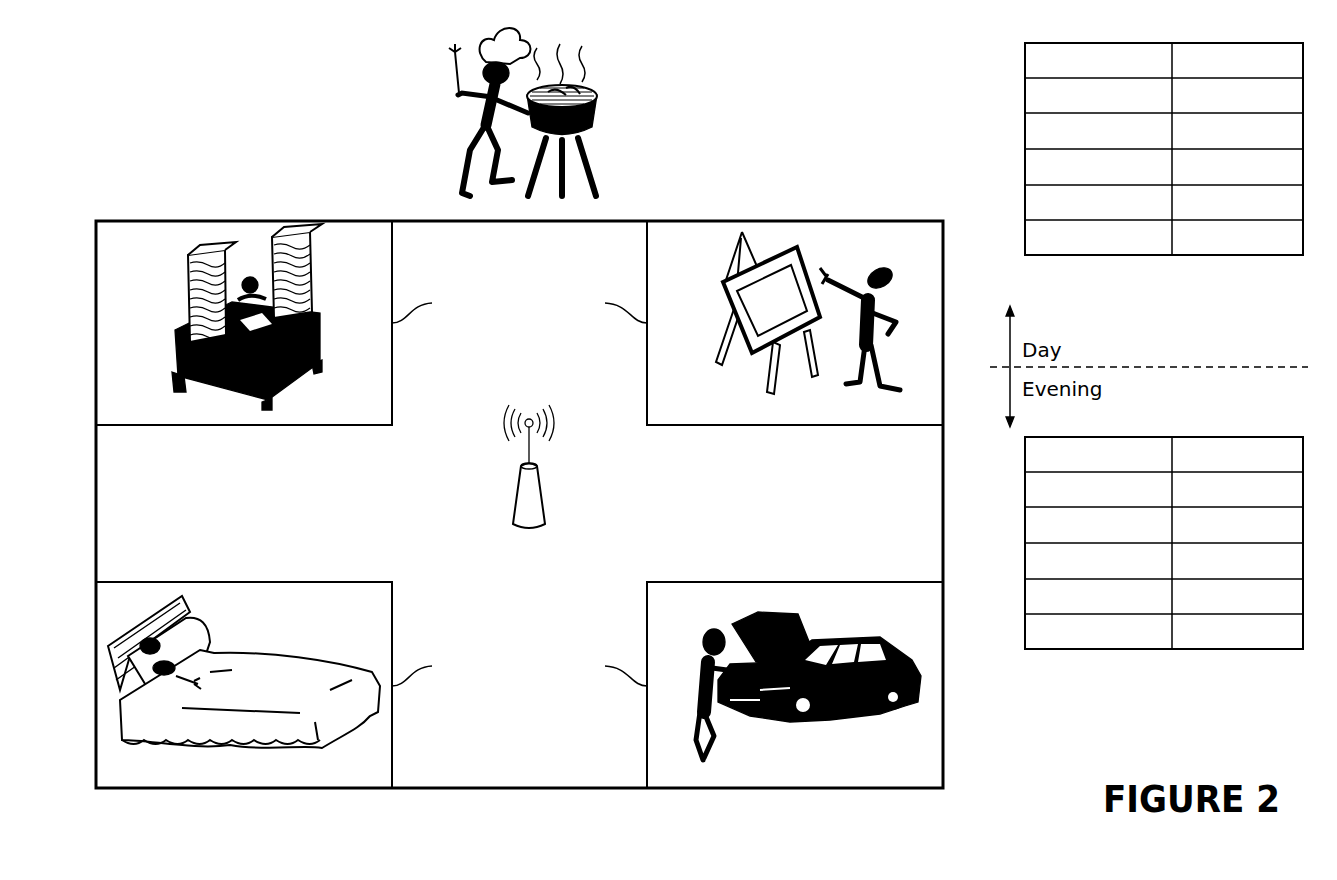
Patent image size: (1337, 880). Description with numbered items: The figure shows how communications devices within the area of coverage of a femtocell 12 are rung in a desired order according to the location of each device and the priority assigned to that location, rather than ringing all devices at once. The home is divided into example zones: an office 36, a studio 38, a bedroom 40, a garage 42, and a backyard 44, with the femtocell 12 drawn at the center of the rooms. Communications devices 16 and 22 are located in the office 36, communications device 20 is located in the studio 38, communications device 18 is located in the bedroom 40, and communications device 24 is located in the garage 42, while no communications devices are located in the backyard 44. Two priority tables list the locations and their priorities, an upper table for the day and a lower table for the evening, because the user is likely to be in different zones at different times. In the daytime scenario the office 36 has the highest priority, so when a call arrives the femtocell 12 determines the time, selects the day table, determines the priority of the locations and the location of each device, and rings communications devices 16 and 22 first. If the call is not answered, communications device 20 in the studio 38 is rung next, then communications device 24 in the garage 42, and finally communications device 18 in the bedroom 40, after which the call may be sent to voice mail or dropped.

The femtocell 12 is at (515, 500).
The communications device 16 is at (273, 321).
The communications device 22 is at (273, 321).
The communications device 18 is at (244, 688).
The communications device 20 is at (822, 325).
The communications device 24 is at (812, 696).
The office 36 is at (433, 307).
The studio 38 is at (608, 307).
The bedroom 40 is at (433, 670).
The garage 42 is at (608, 670).
The backyard 44 is at (608, 111).